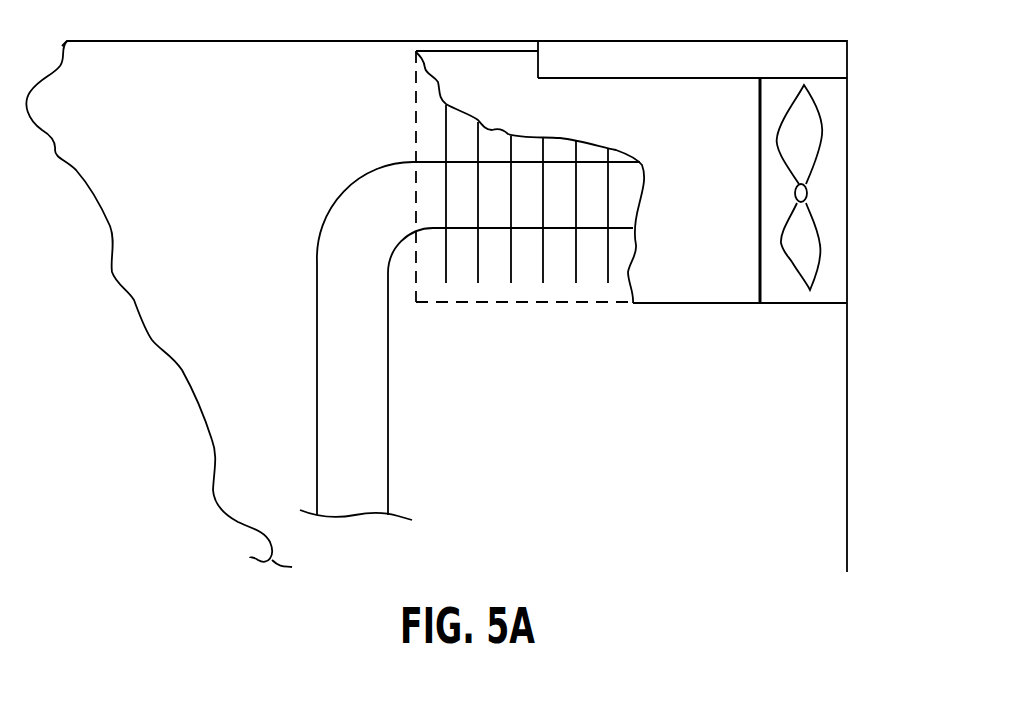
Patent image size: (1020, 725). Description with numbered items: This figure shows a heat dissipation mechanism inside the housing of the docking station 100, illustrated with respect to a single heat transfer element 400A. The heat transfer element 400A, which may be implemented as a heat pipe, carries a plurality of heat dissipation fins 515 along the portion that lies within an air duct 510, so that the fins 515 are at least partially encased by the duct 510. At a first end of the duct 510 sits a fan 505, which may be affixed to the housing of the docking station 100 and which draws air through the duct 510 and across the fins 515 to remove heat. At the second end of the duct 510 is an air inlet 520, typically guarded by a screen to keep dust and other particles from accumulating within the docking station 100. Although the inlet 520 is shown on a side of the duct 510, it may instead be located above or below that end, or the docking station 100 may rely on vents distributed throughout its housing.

The docking station 100 is at (137, 287).
The heat transfer element 400A is at (393, 421).
The fan 505 is at (850, 190).
The air duct 510 is at (695, 310).
The heat dissipation fins 515 is at (607, 312).
The air inlet 520 is at (478, 33).